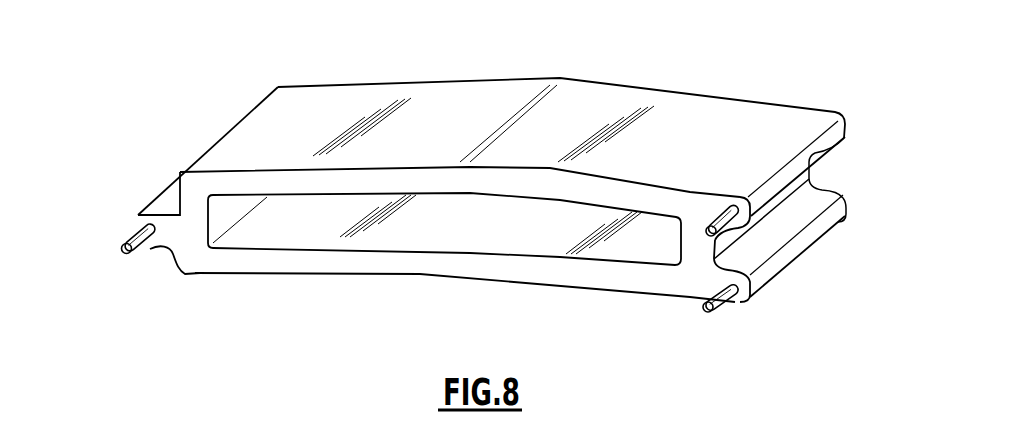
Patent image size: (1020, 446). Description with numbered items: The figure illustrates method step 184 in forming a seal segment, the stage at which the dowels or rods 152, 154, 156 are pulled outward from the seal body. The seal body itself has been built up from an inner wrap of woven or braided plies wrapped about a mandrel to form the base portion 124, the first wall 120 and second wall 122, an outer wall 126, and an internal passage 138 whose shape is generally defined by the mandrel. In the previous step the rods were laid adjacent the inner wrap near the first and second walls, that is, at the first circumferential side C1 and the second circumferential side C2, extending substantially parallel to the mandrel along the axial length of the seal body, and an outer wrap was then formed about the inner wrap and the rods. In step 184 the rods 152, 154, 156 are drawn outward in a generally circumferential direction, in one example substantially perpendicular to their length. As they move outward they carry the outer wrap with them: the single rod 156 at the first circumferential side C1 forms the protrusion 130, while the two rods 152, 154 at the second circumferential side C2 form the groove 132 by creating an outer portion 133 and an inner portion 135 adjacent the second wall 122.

The method step 184 is at (801, 78).
The outer wall 126 is at (631, 197).
The protrusion 130 is at (136, 215).
The rod 156 is at (125, 246).
The first circumferential side C1 is at (153, 249).
The first wall 120 is at (187, 233).
The second wall 122 is at (692, 244).
The passage 138 is at (447, 237).
The base portion 124 is at (516, 268).
The second circumferential side C2 is at (797, 249).
The outer portion 133 is at (817, 181).
The groove 132 is at (714, 262).
The inner portion 135 is at (748, 284).
The rod 154 is at (832, 206).
The rod 152 is at (722, 314).